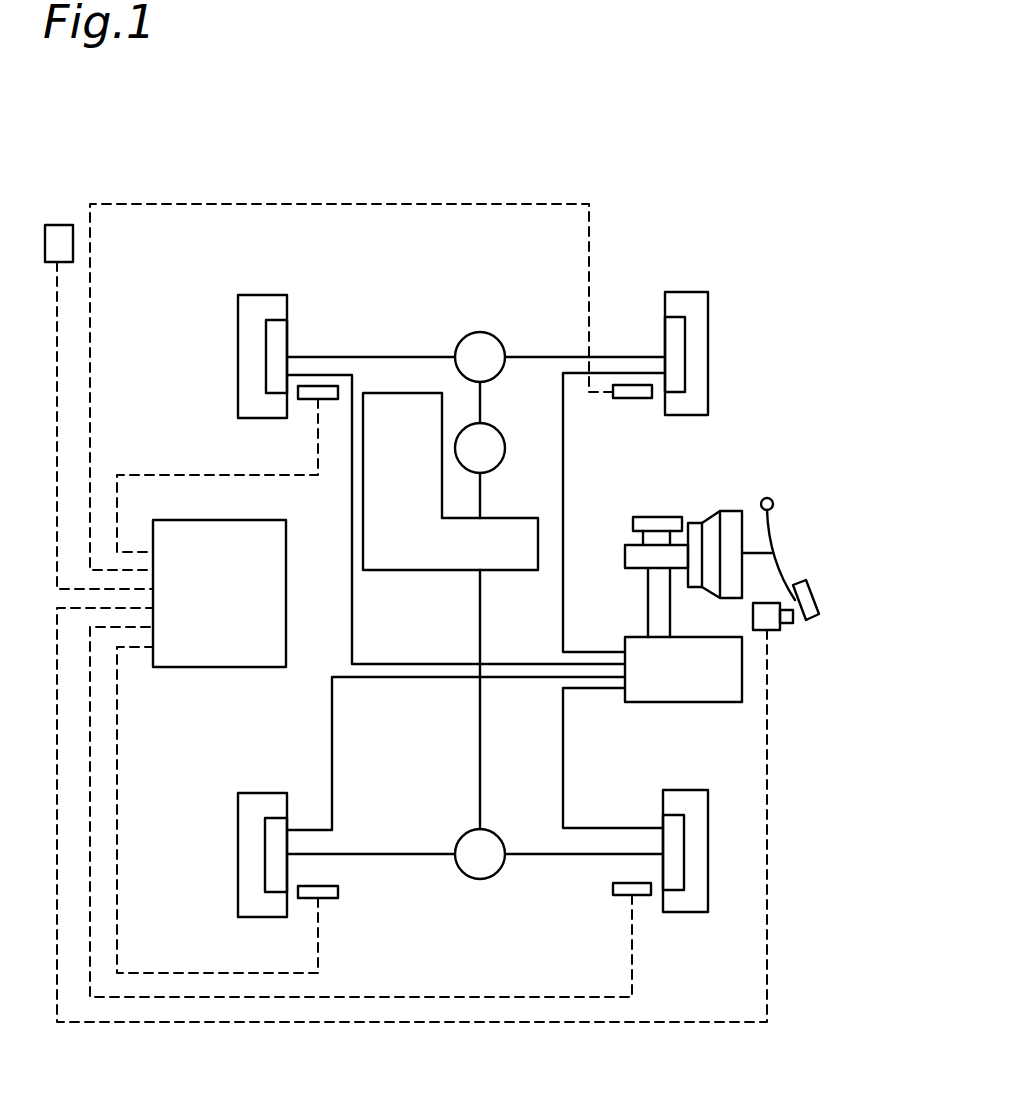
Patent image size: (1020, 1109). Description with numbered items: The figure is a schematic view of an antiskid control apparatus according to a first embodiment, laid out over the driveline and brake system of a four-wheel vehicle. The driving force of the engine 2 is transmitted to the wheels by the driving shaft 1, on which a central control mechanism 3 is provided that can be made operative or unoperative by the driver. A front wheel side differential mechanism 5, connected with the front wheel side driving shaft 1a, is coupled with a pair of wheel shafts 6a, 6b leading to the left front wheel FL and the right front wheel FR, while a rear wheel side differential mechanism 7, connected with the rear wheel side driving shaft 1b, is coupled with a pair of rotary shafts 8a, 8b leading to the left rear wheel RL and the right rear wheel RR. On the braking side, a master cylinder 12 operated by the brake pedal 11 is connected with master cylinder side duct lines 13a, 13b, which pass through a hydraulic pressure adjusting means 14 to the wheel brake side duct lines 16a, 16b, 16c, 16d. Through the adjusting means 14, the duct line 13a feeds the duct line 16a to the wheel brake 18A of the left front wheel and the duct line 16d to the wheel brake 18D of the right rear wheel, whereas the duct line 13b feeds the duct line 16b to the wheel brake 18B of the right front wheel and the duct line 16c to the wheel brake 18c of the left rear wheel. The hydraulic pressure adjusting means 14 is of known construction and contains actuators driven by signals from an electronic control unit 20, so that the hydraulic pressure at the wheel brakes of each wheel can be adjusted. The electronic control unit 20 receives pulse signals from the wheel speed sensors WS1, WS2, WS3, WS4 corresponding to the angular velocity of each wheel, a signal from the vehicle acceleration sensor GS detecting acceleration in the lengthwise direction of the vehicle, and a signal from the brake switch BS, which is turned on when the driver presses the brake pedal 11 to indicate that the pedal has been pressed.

The vehicle acceleration sensor GS is at (57, 225).
The left front wheel FL is at (238, 350).
The right front wheel FR is at (708, 310).
The left rear wheel RL is at (238, 857).
The right rear wheel RR is at (708, 902).
The wheel brake 18A is at (288, 333).
The wheel brake 18B is at (662, 337).
The wheel brake 18c is at (288, 824).
The wheel brake 18D is at (662, 822).
The wheel shaft 6a is at (390, 357).
The wheel shaft 6b is at (537, 357).
The front wheel side differential mechanism 5 is at (490, 332).
The front wheel side driving shaft 1a is at (484, 413).
The central control mechanism 3 is at (505, 448).
The engine 2 is at (408, 570).
The driving shaft 1 is at (483, 625).
The rear wheel side driving shaft 1b is at (483, 728).
The rotary shaft 8a is at (392, 855).
The rear wheel side differential mechanism 7 is at (481, 879).
The rotary shaft 8b is at (543, 856).
The wheel brake side duct line 16a is at (352, 530).
The wheel brake side duct line 16b is at (563, 430).
The wheel brake side duct line 16c is at (399, 678).
The wheel brake side duct line 16d is at (597, 689).
The hydraulic pressure adjusting means 14 is at (675, 703).
The master cylinder 12 is at (659, 553).
The master cylinder side duct line 13a is at (647, 593).
The master cylinder side duct line 13b is at (647, 613).
The brake pedal 11 is at (817, 597).
The brake switch BS is at (780, 632).
The electronic control unit 20 is at (219, 667).
The wheel speed sensor WS1 is at (305, 400).
The wheel speed sensor WS2 is at (627, 399).
The wheel speed sensor WS3 is at (339, 898).
The wheel speed sensor WS4 is at (645, 896).